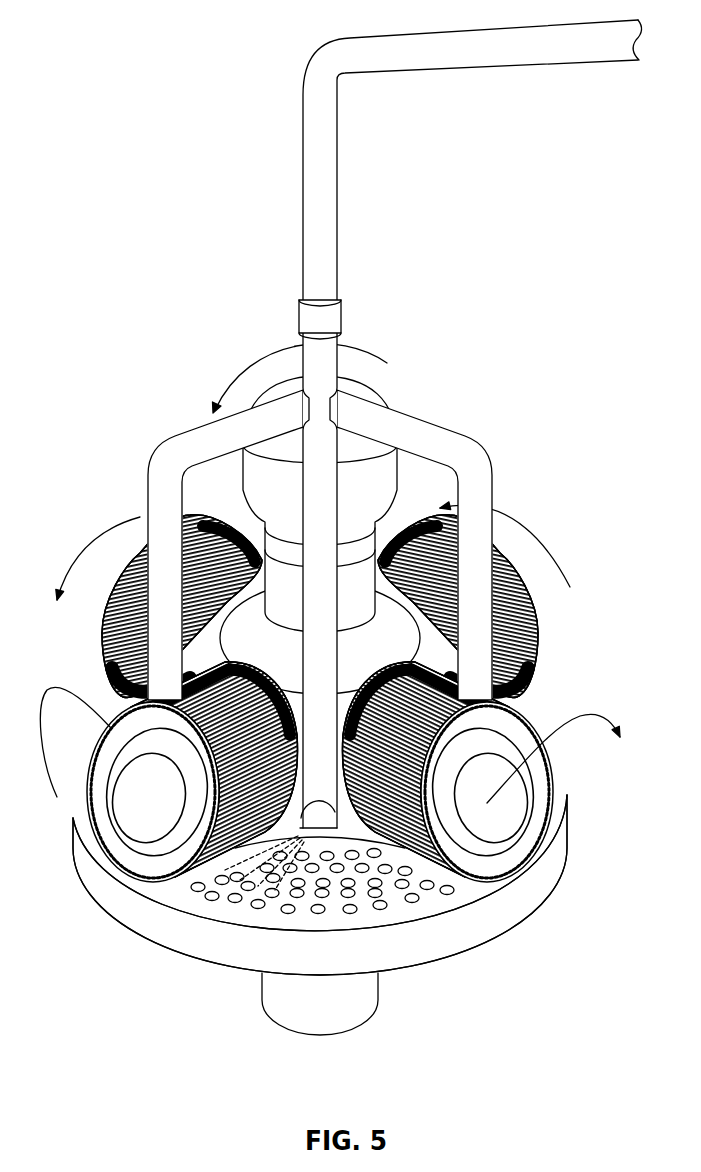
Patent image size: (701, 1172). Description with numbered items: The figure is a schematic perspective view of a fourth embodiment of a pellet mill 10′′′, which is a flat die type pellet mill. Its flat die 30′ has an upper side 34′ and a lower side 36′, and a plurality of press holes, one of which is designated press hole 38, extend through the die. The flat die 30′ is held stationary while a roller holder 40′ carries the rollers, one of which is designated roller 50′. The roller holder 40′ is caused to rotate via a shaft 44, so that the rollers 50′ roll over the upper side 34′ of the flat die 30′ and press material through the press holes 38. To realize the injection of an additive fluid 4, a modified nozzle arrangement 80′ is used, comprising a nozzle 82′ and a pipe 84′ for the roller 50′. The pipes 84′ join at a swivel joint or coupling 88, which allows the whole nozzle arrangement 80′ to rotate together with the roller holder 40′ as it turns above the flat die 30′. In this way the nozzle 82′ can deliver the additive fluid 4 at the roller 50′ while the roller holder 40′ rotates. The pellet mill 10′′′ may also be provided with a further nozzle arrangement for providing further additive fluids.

The pellet mill 10′′′ is at (113, 50).
The swivel joint or coupling 88 is at (333, 313).
The nozzle arrangement 80′ is at (348, 387).
The pipe 84′ is at (327, 513).
The roller holder 40′ is at (392, 659).
The roller 50′ is at (97, 682).
The nozzle 82′ is at (302, 828).
The flat die 30′ is at (90, 895).
The lower side 36′ is at (125, 922).
The upper side 34′ is at (380, 916).
The additive fluid 4 is at (235, 902).
The press hole 38 is at (258, 908).
The shaft 44 is at (368, 992).